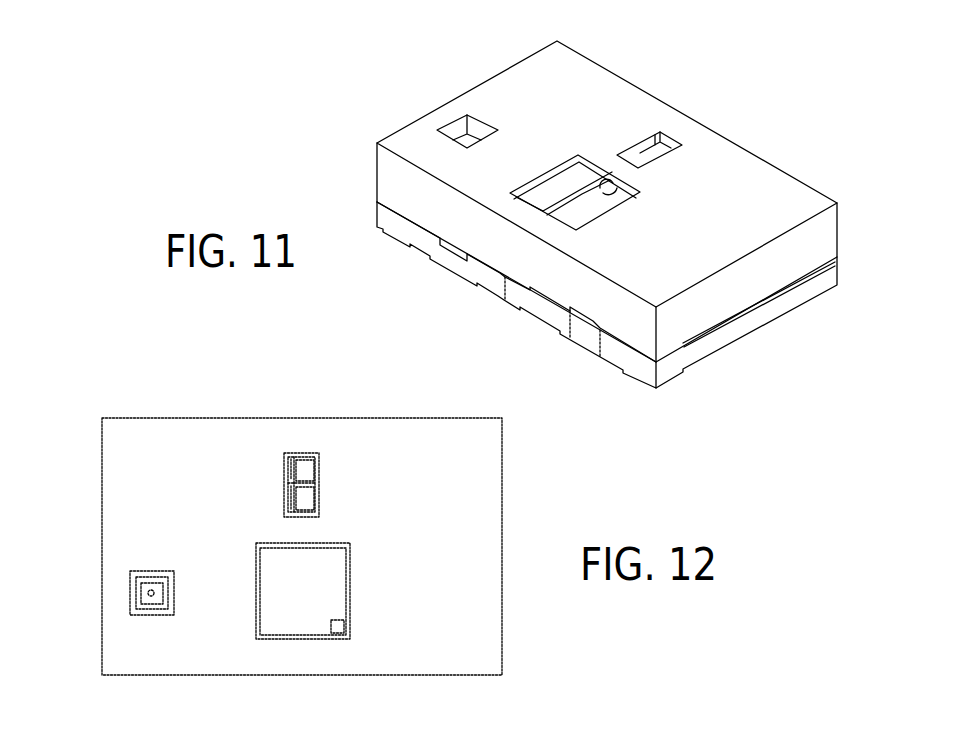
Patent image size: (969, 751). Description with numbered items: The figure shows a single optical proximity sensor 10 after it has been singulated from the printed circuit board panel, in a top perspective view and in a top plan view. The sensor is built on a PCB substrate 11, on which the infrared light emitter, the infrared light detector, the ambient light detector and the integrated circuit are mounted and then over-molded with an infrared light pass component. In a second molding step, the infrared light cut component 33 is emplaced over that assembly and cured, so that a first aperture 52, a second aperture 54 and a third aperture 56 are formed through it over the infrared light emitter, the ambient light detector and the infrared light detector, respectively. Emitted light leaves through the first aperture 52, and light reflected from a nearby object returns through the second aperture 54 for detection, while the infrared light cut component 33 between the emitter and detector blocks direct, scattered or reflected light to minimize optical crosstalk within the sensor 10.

In FIG. 11, the optical proximity sensor 10 is at (361, 97).
In FIG. 12, the optical proximity sensor 10 is at (100, 386).
In FIG. 11, the PCB substrate 11 is at (780, 305).
In FIG. 11, the infrared light cut component 33 is at (743, 176).
In FIG. 12, the infrared light cut component 33 is at (120, 510).
In FIG. 11, the first aperture 52 is at (463, 134).
In FIG. 12, the first aperture 52 is at (153, 604).
In FIG. 11, the second aperture 54 is at (580, 177).
In FIG. 12, the second aperture 54 is at (299, 616).
In FIG. 11, the third aperture 56 is at (662, 132).
In FIG. 12, the third aperture 56 is at (300, 467).